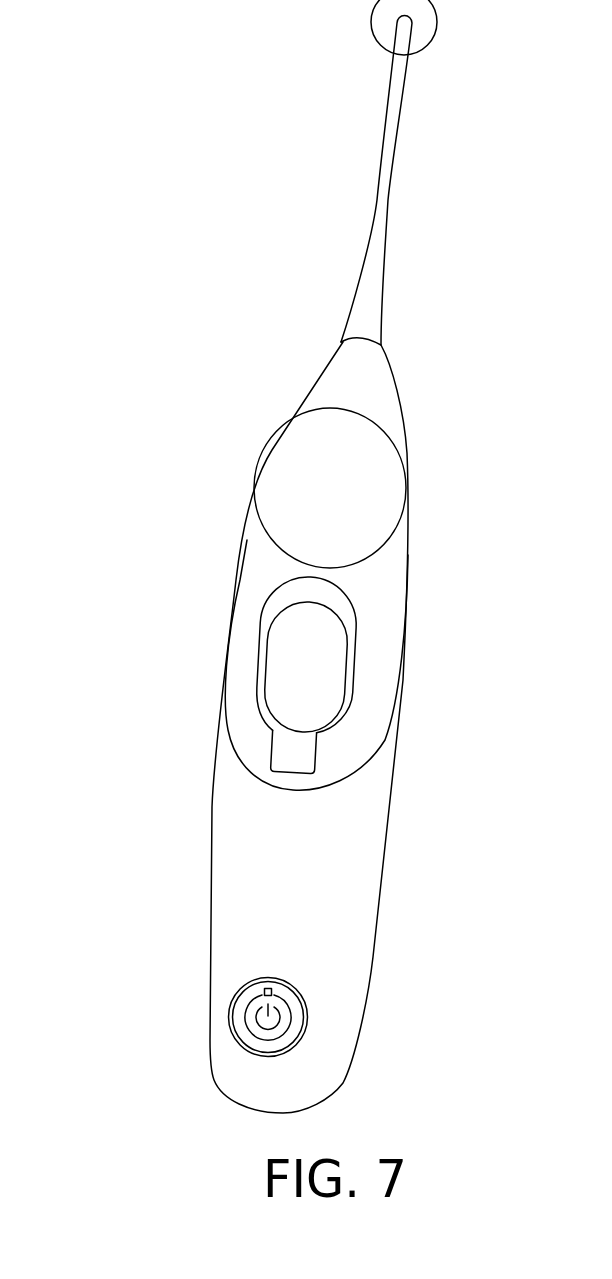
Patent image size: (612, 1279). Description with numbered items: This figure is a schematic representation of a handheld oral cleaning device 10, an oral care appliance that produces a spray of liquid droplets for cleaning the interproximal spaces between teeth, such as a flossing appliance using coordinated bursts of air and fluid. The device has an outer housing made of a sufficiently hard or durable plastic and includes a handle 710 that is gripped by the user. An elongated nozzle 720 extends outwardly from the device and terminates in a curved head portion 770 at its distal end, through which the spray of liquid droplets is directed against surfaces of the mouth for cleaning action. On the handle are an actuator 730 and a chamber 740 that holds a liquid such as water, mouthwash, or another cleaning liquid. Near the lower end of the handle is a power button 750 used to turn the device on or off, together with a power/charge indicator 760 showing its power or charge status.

The oral cleaning device 10 is at (107, 95).
The handle 710 is at (396, 777).
The elongated nozzle 720 is at (387, 198).
The actuator 730 is at (281, 479).
The chamber 740 is at (284, 657).
The power button 750 is at (254, 1027).
The power/charge indicator 760 is at (263, 993).
The curved head portion 770 is at (437, 22).